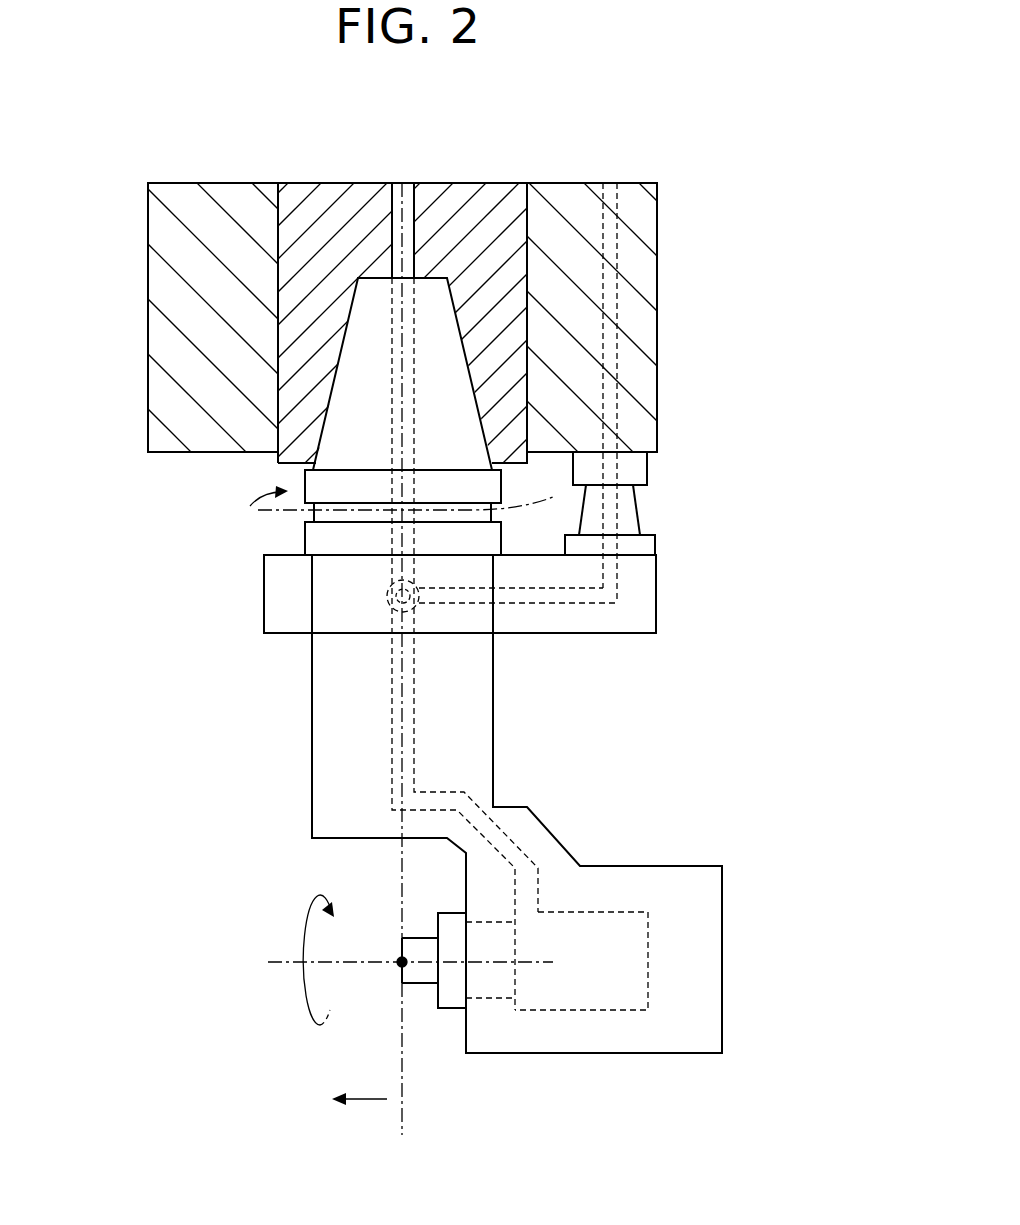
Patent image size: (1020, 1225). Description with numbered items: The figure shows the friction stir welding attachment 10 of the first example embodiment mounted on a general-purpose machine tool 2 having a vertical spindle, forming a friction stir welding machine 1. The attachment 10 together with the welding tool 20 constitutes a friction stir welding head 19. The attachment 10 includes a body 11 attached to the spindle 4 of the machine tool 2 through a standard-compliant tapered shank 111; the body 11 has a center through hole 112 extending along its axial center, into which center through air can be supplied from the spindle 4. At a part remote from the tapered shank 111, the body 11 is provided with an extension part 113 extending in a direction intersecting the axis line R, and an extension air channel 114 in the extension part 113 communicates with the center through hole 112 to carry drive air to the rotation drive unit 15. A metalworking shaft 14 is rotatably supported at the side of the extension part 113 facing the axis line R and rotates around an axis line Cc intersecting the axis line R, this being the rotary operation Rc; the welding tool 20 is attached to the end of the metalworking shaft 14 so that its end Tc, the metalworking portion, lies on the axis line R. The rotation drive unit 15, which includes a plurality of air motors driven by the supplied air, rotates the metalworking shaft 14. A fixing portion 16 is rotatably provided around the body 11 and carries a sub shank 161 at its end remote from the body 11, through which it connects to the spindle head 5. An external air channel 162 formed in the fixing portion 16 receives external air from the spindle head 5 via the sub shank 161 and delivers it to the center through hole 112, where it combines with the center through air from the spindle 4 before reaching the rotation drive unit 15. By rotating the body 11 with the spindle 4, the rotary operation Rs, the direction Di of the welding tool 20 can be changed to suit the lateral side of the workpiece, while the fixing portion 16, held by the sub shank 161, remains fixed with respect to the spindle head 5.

The friction stir welding machine 1 is at (712, 128).
The machine tool 2 is at (672, 215).
The spindle 4 is at (508, 283).
The spindle head 5 is at (640, 385).
The friction stir welding attachment 10 is at (305, 668).
The body 11 is at (472, 735).
The tapered shank 111 is at (337, 372).
The center through hole 112 is at (392, 613).
The extension part 113 is at (627, 885).
The extension air channel 114 is at (505, 837).
The metalworking shaft 14 is at (491, 983).
The rotation drive unit 15 is at (597, 985).
The fixing portion 16 is at (643, 592).
The sub shank 161 is at (628, 510).
The external air channel 162 is at (575, 598).
The friction stir welding head 19 is at (163, 672).
The welding tool 20 is at (428, 919).
The axis line R is at (402, 218).
The rotary operation Rs is at (403, 486).
The rotary operation Rc is at (305, 954).
The axis line Cc is at (394, 961).
The end Tc is at (398, 965).
The direction Di is at (346, 1099).